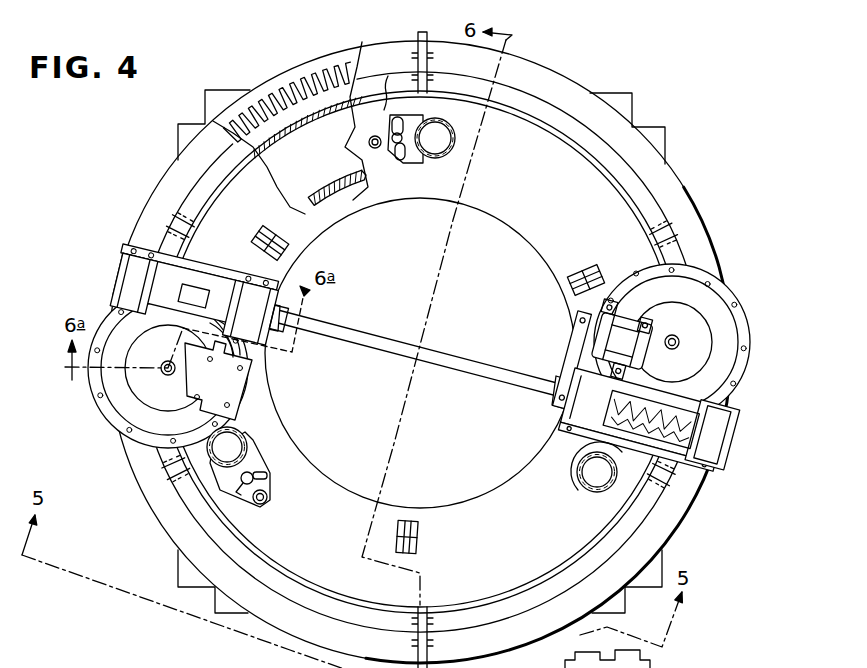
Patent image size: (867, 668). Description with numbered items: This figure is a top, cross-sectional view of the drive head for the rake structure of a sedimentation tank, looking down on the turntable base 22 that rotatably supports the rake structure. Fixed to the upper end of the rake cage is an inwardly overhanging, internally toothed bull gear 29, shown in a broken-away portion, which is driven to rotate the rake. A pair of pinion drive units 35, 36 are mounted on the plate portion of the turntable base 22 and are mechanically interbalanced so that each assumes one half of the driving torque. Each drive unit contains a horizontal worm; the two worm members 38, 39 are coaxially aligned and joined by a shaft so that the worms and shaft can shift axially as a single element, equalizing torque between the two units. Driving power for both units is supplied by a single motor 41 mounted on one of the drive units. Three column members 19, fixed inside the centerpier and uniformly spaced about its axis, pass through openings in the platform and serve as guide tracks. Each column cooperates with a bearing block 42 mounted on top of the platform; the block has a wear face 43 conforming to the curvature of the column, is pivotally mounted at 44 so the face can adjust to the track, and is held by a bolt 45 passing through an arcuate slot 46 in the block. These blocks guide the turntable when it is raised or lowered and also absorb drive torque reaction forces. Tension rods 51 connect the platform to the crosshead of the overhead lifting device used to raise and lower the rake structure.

The column members 19 is at (455, 138).
The turntable base 22 is at (320, 197).
The bull gear 29 is at (276, 85).
The pinion drive unit 35 is at (105, 413).
The pinion drive unit 36 is at (750, 338).
The worm member 38 is at (198, 283).
The worm member 39 is at (650, 398).
The motor 41 is at (650, 330).
The bearing blocks 42 is at (420, 164).
The wear face 43 is at (430, 161).
The pivotal mounting 44 is at (374, 150).
The bolt 45 is at (404, 150).
The arcuate slot 46 is at (390, 118).
The tension rods 51 is at (272, 232).